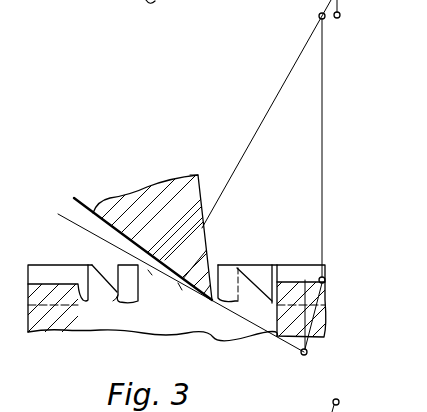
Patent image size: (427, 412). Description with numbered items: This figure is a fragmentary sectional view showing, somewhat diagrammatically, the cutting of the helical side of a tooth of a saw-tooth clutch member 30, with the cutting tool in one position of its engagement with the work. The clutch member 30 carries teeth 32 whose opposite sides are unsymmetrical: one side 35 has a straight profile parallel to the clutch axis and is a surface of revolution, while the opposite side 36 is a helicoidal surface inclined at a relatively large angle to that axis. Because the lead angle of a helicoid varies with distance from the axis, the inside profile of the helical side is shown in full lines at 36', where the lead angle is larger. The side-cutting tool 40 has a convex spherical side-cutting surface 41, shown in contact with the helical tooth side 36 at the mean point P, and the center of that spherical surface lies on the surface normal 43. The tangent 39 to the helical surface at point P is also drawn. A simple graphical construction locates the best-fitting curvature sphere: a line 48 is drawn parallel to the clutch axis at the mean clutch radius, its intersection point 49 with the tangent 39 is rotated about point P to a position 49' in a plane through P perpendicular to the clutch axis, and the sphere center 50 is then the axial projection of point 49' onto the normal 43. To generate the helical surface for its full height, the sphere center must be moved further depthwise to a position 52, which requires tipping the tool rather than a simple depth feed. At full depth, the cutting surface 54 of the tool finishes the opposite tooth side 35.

The clutch member 30 is at (180, 329).
The teeth 32 is at (225, 266).
The tooth side 35 is at (127, 272).
The helical tooth side 36 is at (258, 268).
The inside profile of helical tooth side 36' is at (198, 308).
The tangent 39 is at (68, 221).
The cutting tool 40 is at (160, 193).
The spherical side-cutting surface 41 is at (141, 237).
The surface normal 43 is at (254, 139).
The line parallel to clutch axis 48 is at (329, 318).
The intersection point 49 is at (303, 333).
The rotated intersection point 49' is at (334, 306).
The center of curvature sphere 50 is at (319, 16).
The final sphere center position 52 is at (340, 16).
The cutting surface 54 is at (203, 177).
The mean point P is at (171, 312).